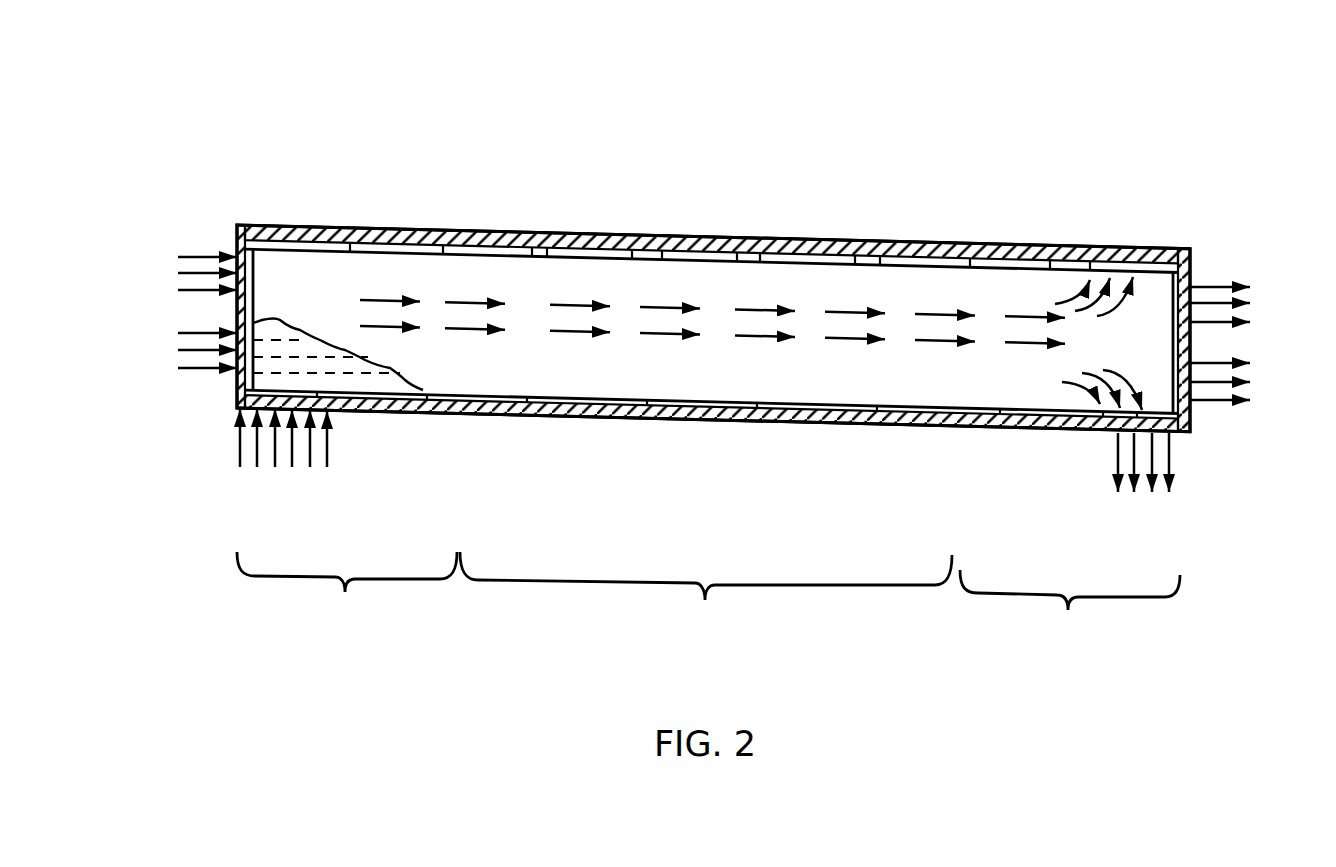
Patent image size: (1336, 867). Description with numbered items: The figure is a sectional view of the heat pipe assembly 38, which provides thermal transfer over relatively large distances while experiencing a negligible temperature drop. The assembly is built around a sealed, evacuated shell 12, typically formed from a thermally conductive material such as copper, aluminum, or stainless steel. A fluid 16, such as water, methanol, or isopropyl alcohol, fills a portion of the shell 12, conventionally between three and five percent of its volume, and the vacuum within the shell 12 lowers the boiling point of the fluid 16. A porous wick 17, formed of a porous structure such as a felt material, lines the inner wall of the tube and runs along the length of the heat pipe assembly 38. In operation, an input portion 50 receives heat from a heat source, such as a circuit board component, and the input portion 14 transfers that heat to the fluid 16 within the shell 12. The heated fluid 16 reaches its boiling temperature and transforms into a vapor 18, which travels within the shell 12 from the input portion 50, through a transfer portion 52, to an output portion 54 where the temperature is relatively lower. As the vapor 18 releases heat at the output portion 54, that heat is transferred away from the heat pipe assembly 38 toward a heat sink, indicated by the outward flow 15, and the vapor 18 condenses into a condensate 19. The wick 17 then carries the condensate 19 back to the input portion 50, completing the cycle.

The heat pipe assembly 38 is at (925, 72).
The shell 12 is at (267, 224).
The condensate 19 is at (462, 241).
The porous wick 17 is at (990, 413).
The vapor 18 is at (1005, 286).
The fluid 16 is at (383, 384).
The input portion 14 is at (173, 452).
The heat output 15 is at (1202, 467).
The input portion 50 is at (347, 594).
The transfer portion 52 is at (706, 599).
The output portion 54 is at (1070, 612).